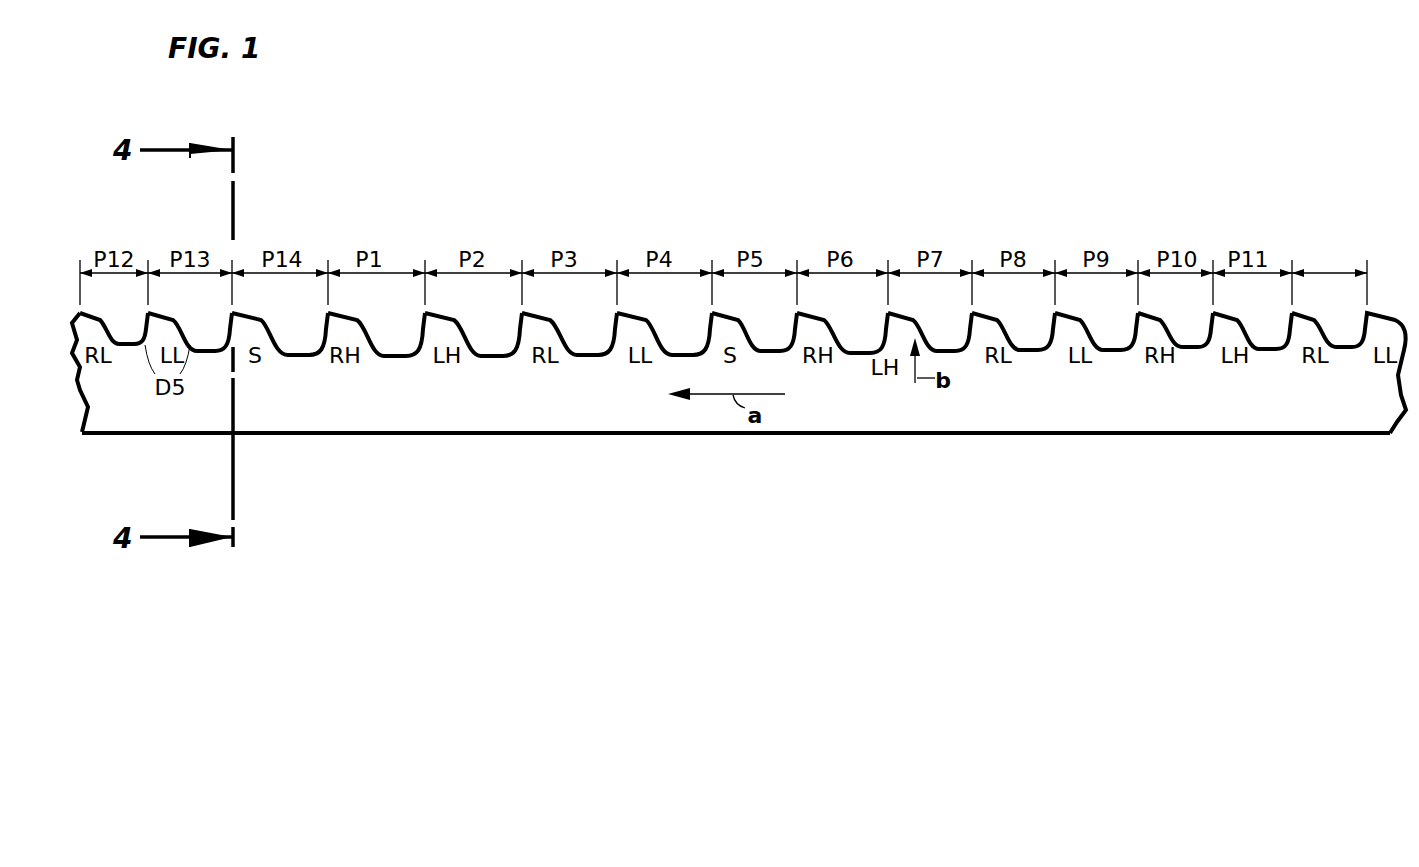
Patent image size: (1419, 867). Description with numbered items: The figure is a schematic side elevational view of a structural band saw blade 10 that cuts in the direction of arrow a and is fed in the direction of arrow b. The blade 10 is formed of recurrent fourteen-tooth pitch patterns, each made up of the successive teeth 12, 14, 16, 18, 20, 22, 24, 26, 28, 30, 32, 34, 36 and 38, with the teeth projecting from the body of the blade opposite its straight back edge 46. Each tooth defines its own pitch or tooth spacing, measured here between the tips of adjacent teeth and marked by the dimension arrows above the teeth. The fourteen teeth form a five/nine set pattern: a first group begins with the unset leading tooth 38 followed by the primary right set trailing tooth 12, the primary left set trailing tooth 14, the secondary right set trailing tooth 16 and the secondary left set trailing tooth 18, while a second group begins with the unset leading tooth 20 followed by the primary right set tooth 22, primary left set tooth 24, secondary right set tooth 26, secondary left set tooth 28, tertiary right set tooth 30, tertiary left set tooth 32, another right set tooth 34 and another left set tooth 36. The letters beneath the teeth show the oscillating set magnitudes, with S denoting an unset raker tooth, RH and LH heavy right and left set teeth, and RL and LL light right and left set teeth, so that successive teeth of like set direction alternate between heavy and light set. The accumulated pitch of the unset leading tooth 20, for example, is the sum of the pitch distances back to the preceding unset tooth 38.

The structural band saw blade 10 is at (735, 192).
The primary right set trailing tooth 12 is at (355, 319).
The primary left set trailing tooth 14 is at (455, 319).
The secondary right set trailing tooth 16 is at (549, 319).
The secondary left set trailing tooth 18 is at (644, 319).
The first unset leading tooth 20 is at (738, 319).
The primary right set trailing tooth 22 is at (825, 319).
The primary left set trailing tooth 24 is at (914, 319).
The secondary right set trailing tooth 26 is at (999, 319).
The secondary left set trailing tooth 28 is at (1082, 319).
The tertiary right set trailing tooth 30 is at (1164, 319).
The tertiary left set trailing tooth 32 is at (1242, 319).
The right set trailing tooth 34 is at (92, 316).
The left set trailing tooth 36 is at (176, 318).
The first unset leading tooth 38 is at (258, 318).
The back edge 46 is at (733, 434).